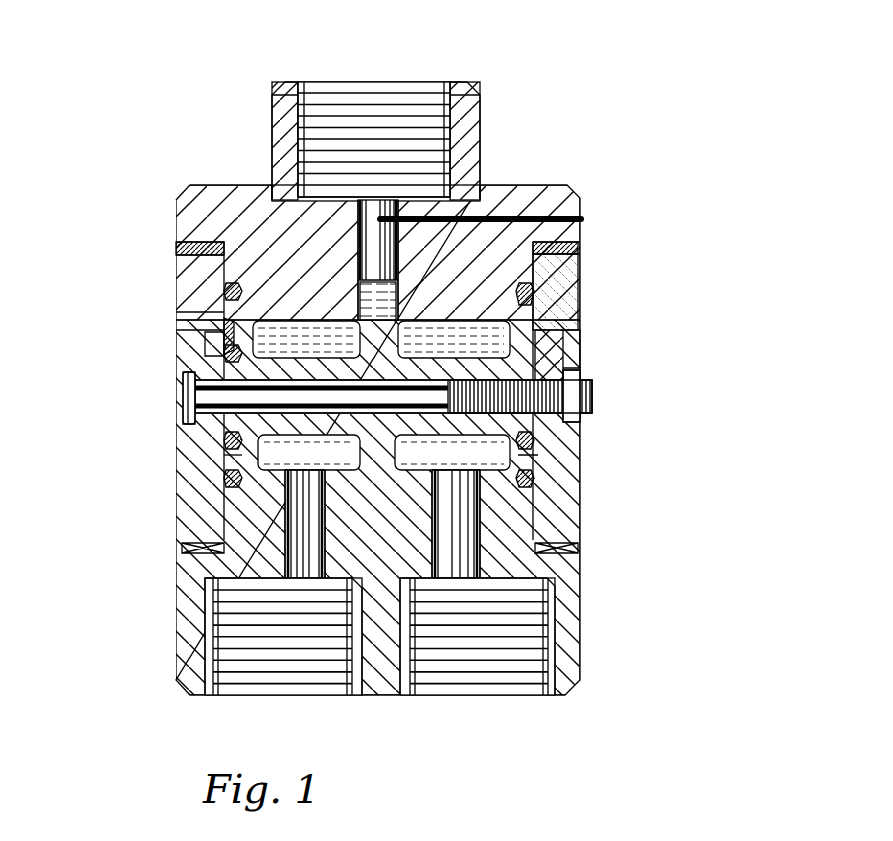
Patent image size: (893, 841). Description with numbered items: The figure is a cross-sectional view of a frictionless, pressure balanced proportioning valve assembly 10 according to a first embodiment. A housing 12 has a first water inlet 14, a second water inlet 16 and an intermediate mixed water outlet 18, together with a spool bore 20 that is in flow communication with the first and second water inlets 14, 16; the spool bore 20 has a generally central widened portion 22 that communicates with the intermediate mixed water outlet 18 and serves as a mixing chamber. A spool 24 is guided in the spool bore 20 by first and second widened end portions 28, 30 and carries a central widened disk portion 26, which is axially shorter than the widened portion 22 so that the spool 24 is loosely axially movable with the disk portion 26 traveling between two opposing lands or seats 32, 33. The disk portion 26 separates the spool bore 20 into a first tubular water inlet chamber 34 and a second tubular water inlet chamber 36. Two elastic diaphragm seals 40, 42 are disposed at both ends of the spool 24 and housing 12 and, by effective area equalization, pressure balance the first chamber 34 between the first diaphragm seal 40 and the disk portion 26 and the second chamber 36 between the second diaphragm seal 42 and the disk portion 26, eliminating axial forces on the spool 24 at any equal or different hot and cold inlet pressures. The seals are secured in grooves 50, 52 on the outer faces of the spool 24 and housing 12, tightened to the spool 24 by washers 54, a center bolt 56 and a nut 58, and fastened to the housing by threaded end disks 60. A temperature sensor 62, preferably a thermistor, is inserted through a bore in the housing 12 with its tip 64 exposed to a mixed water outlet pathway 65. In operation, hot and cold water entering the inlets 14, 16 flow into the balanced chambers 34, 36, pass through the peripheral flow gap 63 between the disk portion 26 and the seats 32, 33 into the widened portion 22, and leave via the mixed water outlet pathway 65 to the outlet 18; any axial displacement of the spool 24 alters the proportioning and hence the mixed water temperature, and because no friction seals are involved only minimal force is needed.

The proportioning valve assembly 10 is at (590, 49).
The housing 12 is at (552, 186).
The first water inlet 14 is at (307, 575).
The second water inlet 16 is at (457, 565).
The intermediate mixed water outlet 18 is at (377, 103).
The spool bore 20 is at (264, 323).
The central widened portion 22 is at (383, 510).
The spool 24 is at (230, 448).
The central widened disk portion 26 is at (272, 323).
The first widened end portion 28 is at (207, 472).
The second widened end portion 30 is at (540, 463).
The land or seat 32 is at (290, 518).
The land or seat 33 is at (468, 518).
The first tubular water inlet chamber 34 is at (317, 466).
The second tubular water inlet chamber 36 is at (471, 466).
The first elastic diaphragm seal 40 is at (230, 290).
The second elastic diaphragm seal 42 is at (530, 290).
The groove 50 is at (234, 354).
The groove 52 is at (224, 323).
The washer 54 is at (213, 342).
The center bolt 56 is at (186, 398).
The nut 58 is at (578, 376).
The threaded end disk 60 is at (200, 250).
The temperature sensor 62 is at (586, 218).
The peripheral flow gap 63 is at (447, 333).
The tip 64 is at (378, 200).
The mixed water outlet pathway 65 is at (372, 322).